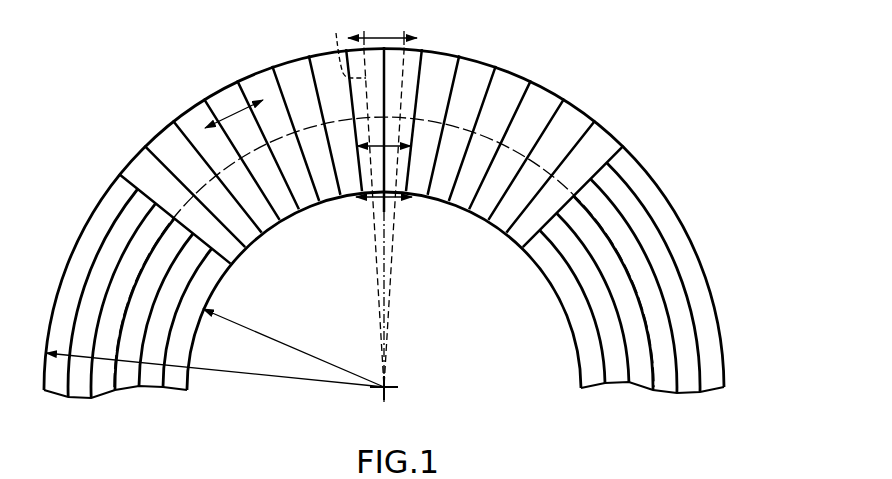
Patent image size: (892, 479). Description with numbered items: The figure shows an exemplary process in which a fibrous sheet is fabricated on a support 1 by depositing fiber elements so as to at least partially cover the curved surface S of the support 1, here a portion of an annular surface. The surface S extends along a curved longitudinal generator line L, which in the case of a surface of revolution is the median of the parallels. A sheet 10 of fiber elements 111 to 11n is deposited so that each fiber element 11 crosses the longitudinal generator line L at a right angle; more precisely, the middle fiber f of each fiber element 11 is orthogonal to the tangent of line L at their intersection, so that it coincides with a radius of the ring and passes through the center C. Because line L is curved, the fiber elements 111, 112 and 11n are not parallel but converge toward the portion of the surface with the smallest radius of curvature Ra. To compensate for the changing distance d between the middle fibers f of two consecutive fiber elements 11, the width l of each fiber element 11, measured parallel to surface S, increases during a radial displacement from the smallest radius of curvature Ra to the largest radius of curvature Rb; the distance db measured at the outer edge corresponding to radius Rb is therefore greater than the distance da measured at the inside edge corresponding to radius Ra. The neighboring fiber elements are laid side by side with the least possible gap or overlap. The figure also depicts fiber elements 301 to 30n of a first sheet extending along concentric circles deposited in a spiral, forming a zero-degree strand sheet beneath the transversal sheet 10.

The support 1 is at (623, 46).
The sheet 10 is at (526, 74).
The fiber element 11 is at (232, 139).
The fiber element 11n is at (592, 146).
The fiber element 111 is at (376, 84).
The fiber element 112 is at (408, 64).
The fiber element of first sheet 30n is at (593, 386).
The fiber element of first sheet 301 is at (712, 385).
The surface S is at (62, 287).
The longitudinal generator line L is at (172, 215).
The center C is at (386, 388).
The smallest radius of curvature Ra is at (293, 347).
The largest radius of curvature Rb is at (266, 375).
The width l is at (233, 113).
The middle fiber f is at (347, 47).
The distance at outer edge db is at (382, 31).
The distance d is at (384, 136).
The distance at inside edge da is at (393, 198).